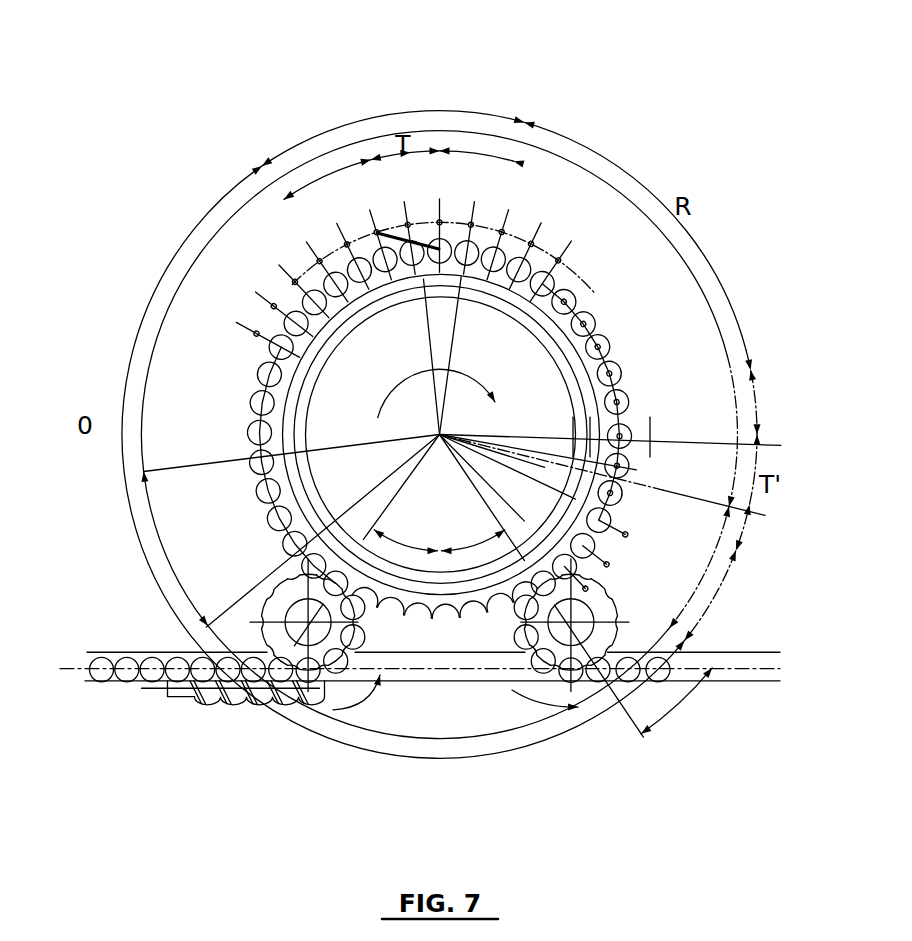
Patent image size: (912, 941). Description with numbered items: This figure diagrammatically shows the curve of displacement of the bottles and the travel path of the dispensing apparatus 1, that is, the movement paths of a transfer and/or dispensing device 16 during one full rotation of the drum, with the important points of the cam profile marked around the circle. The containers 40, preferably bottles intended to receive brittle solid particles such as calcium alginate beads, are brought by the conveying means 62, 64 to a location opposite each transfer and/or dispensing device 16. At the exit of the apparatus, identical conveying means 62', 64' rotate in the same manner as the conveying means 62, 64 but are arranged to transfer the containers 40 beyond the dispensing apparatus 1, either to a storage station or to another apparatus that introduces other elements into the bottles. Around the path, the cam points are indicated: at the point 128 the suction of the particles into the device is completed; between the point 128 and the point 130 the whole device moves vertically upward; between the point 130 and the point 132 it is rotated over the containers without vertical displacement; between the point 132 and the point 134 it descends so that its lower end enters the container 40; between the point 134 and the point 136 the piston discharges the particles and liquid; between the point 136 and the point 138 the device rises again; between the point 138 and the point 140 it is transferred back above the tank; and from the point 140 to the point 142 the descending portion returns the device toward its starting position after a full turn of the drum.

The transfer and/or dispensing device 1 is at (456, 434).
The transfer and/or dispensing device 16 is at (458, 409).
The container 40 is at (609, 593).
The conveying means 62 is at (233, 723).
The conveying means 62' is at (604, 725).
The conveying means 64 is at (245, 625).
The conveying means 64' is at (550, 625).
The point 128 is at (317, 258).
The point 130 is at (380, 245).
The point 132 is at (438, 405).
The point 134 is at (504, 245).
The point 136 is at (627, 390).
The point 138 is at (457, 437).
The point 140 is at (627, 511).
The point 142 is at (616, 575).